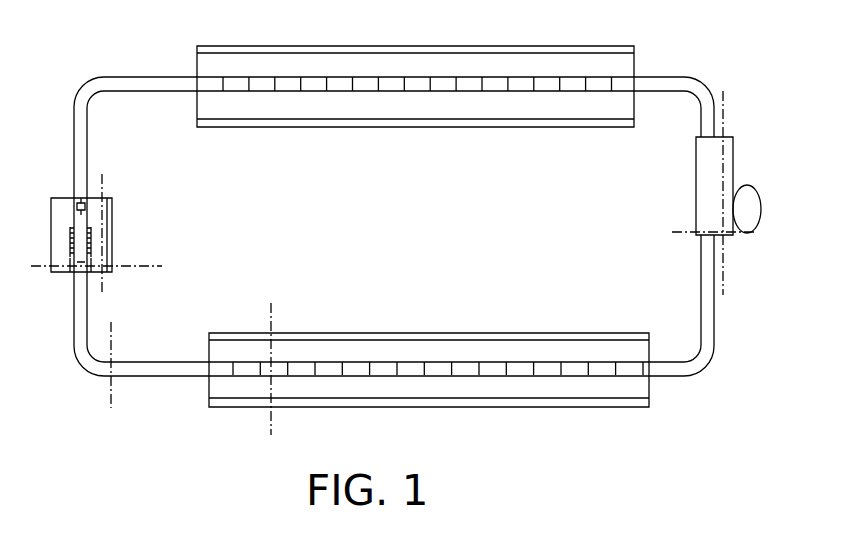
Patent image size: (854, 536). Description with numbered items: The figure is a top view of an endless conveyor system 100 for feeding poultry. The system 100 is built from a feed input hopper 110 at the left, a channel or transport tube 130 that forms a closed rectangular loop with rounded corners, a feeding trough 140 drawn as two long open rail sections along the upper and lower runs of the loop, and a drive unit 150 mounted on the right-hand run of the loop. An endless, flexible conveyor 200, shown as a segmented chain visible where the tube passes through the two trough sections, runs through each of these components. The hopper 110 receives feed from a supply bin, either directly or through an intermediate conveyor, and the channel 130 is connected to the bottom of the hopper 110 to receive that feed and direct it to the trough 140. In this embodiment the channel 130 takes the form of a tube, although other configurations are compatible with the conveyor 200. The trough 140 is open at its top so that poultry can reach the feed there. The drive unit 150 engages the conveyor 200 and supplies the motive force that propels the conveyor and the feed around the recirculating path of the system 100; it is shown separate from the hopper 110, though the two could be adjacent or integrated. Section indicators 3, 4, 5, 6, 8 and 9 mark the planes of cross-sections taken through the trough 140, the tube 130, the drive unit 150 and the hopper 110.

The endless conveyor system 100 is at (402, 37).
The feed input hopper 110 is at (112, 212).
The channel or transport tube 130 is at (174, 362).
The feeding trough 140 is at (385, 127).
The drive unit 150 is at (696, 185).
The endless flexible conveyor 200 is at (260, 83).
The section line 3- 3 is at (293, 425).
The section line 4- 4 is at (98, 340).
The section line 5- 5 is at (732, 278).
The section line 6- 6 is at (747, 251).
The section line 8- 8 is at (113, 284).
The section line 9- 9 is at (154, 288).